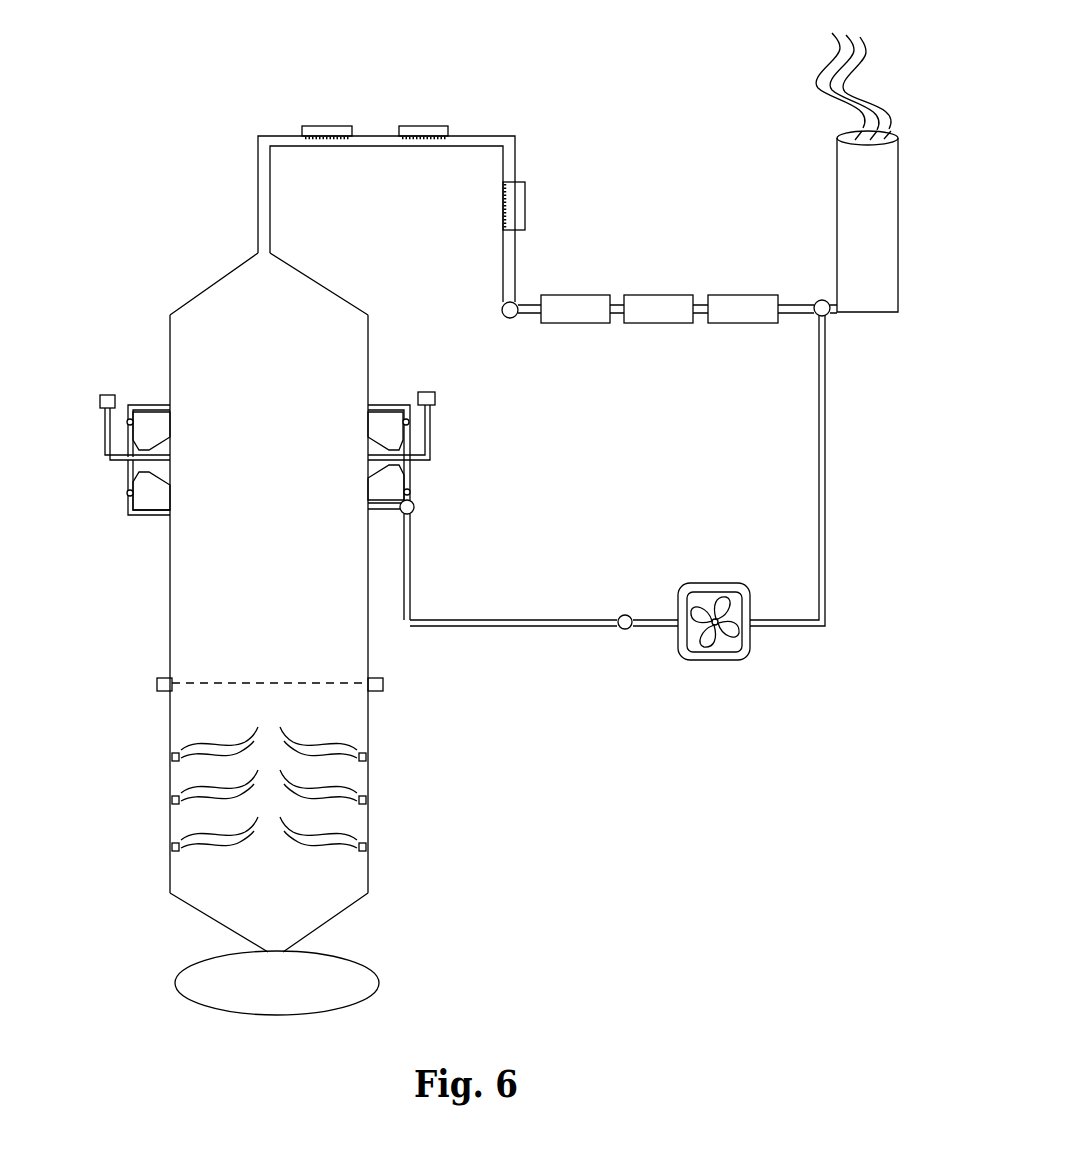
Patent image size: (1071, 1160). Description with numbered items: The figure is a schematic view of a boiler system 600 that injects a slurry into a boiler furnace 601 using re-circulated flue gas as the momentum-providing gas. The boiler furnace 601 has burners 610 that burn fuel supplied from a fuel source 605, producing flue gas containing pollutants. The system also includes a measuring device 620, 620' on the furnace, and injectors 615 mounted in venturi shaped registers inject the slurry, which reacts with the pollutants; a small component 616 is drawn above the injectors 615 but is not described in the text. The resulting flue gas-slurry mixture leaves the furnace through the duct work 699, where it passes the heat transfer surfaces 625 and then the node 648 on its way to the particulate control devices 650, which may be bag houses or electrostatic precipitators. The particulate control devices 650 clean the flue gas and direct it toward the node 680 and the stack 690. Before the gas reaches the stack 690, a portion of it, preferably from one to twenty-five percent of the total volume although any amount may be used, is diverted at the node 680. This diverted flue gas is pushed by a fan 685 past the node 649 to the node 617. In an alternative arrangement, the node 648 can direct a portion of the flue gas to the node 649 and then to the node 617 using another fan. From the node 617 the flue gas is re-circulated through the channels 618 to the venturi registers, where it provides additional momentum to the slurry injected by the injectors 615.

The boiler system 600 is at (104, 196).
The boiler furnace 601 is at (254, 488).
The fuel source 605 is at (259, 995).
The burners 610 is at (165, 760).
The injectors 615 is at (170, 405).
The feed hopper 616 is at (106, 395).
The node 617 is at (414, 507).
The channels 618 is at (128, 508).
The measuring device 620 is at (237, 663).
The measuring device 620' is at (404, 663).
The heat transfer surfaces 625 is at (323, 126).
The node 648 is at (516, 318).
The node 649 is at (625, 630).
The particulate control devices 650 is at (778, 283).
The node 680 is at (818, 300).
The fan 685 is at (714, 583).
The stack 690 is at (837, 190).
The duct work 699 is at (258, 197).